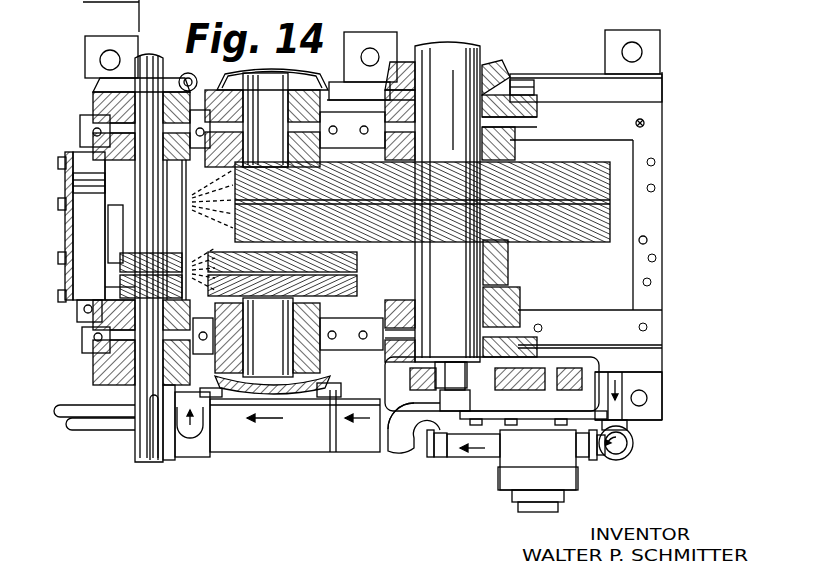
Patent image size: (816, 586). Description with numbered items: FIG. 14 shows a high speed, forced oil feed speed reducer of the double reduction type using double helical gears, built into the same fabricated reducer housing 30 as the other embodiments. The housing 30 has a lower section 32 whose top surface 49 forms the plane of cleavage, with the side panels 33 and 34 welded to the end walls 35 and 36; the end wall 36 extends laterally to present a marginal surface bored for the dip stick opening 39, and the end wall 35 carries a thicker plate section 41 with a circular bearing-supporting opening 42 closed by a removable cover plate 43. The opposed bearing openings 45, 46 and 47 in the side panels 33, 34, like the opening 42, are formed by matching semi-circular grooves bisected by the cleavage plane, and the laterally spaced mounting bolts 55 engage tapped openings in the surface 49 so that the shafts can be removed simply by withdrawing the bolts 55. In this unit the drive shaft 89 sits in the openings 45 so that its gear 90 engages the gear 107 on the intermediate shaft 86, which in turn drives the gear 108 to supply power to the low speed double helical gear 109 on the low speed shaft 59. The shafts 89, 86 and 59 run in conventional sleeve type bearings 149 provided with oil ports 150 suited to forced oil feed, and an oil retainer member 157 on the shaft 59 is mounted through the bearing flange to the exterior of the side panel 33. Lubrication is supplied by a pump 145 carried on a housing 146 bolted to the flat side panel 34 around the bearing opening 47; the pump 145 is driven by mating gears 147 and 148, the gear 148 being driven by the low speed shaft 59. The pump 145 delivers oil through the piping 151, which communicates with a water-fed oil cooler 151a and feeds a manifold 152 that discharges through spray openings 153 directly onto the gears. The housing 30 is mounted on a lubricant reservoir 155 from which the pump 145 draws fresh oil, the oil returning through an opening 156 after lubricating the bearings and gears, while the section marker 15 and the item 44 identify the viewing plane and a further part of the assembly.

The section line 15 is at (136, 15).
The reducer housing 30 is at (567, 92).
The lower section 32 is at (655, 116).
The side panel 33 is at (641, 119).
The side panel 34 is at (662, 343).
The end wall 35 is at (82, 316).
The end wall 36 is at (658, 299).
The dip stick opening 39 is at (647, 239).
The thicker plate section 41 is at (73, 156).
The bearing-supporting opening 42 is at (65, 185).
The removable cover plate 43 is at (60, 200).
The bolt 44 is at (58, 258).
The bearing opening 45 is at (80, 128).
The bearing opening 46 is at (201, 232).
The bearing opening 47 is at (385, 120).
The top surface 49 is at (655, 131).
The mounting bolts 55 is at (651, 186).
The low speed shaft 59 is at (480, 50).
The intermediate shaft 86 is at (266, 100).
The drive shaft 89 is at (142, 66).
The gear 90 is at (120, 287).
The gear 107 is at (357, 266).
The gear 108 is at (265, 158).
The low speed double helical gear 109 is at (422, 192).
The pump 145 is at (520, 507).
The housing 146 is at (385, 396).
The gear 147 is at (577, 368).
The gear 148 is at (449, 396).
The sleeve type bearings 149 is at (110, 143).
The oil ports 150 is at (95, 122).
The piping 151 is at (470, 460).
The water-fed oil cooler 151a is at (300, 440).
The manifold 152 is at (180, 234).
The spray openings 153 is at (200, 230).
The lubricant reservoir 155 is at (118, 232).
The opening 156 is at (118, 206).
The oil retainer member 157 is at (505, 76).